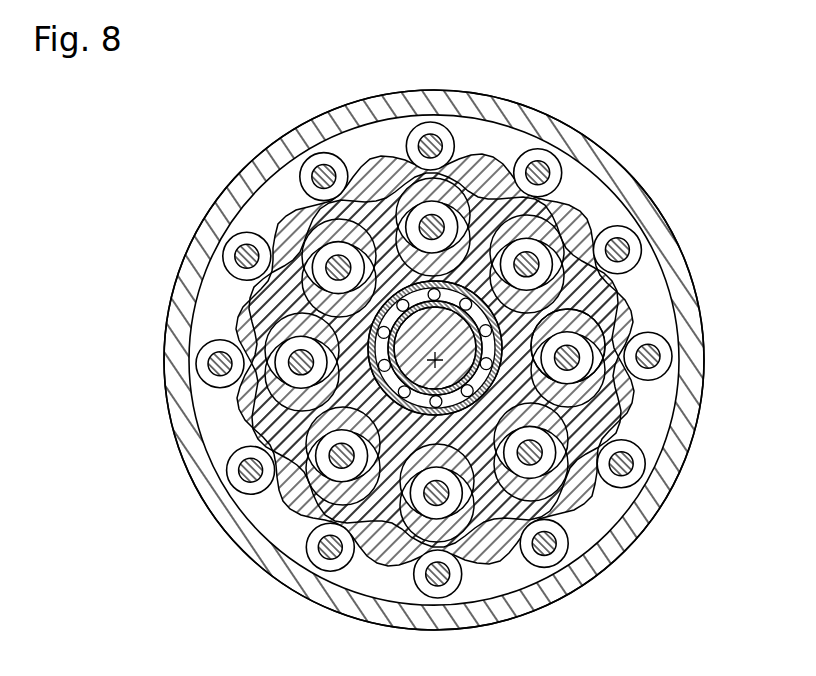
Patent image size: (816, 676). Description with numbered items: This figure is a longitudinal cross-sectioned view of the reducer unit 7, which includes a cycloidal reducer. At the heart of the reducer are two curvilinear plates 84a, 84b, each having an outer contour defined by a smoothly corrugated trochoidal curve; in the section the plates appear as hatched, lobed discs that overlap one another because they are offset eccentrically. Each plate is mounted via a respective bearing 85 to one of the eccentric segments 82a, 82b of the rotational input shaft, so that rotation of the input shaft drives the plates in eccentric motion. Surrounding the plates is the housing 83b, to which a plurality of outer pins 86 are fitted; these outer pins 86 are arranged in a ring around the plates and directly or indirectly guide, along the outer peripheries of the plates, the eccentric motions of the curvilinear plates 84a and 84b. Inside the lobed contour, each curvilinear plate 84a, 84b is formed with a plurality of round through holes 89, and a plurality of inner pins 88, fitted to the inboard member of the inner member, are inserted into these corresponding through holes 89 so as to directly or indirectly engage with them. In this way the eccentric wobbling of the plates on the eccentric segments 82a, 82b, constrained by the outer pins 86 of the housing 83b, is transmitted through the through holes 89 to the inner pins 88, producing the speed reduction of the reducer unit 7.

The reducer unit 7 is at (245, 158).
The housing 83b is at (212, 222).
The curvilinear plate 84a is at (663, 258).
The curvilinear plate 84b is at (578, 212).
The bearing 85 is at (378, 316).
The outer pin 86 is at (421, 143).
The inner pin 88 is at (525, 259).
The through hole 89 is at (577, 325).
The eccentric segment 82a is at (243, 440).
The eccentric segment 82b is at (395, 380).